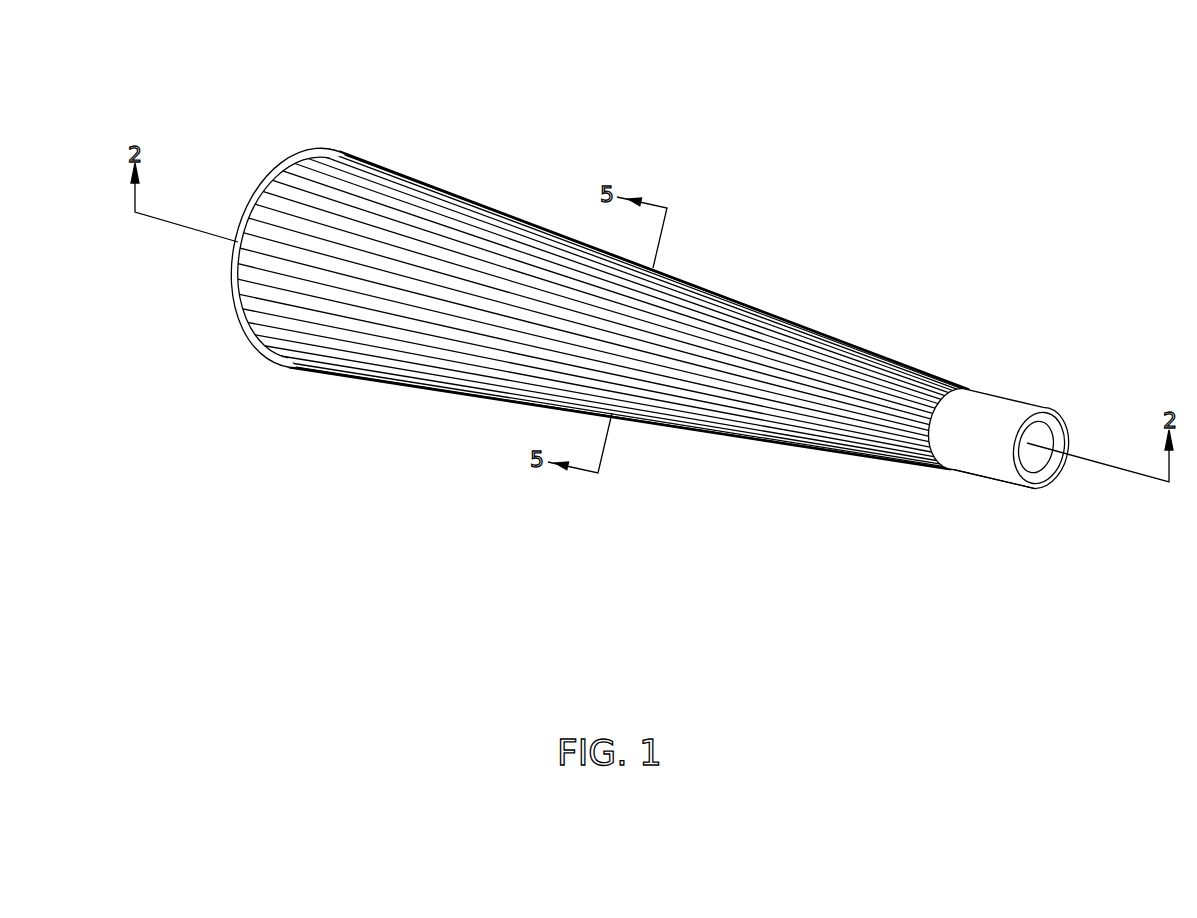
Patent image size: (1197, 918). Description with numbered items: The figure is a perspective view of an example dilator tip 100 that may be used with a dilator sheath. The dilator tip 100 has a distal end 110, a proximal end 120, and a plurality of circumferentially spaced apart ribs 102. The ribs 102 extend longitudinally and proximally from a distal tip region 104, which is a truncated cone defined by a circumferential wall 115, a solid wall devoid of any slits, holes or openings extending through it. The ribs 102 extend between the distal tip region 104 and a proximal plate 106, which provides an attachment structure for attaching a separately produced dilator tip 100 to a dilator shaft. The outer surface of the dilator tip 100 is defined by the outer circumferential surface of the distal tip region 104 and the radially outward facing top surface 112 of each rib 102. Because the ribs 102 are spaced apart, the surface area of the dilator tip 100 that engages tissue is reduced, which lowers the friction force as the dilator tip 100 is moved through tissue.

The dilator tip 100 is at (648, 305).
The ribs 102 is at (383, 202).
The distal tip region 104 is at (985, 472).
The proximal plate 106 is at (243, 312).
The distal end 110 is at (1053, 412).
The top surface 112 is at (378, 318).
The circumferential wall 115 is at (1004, 405).
The proximal end 120 is at (296, 165).